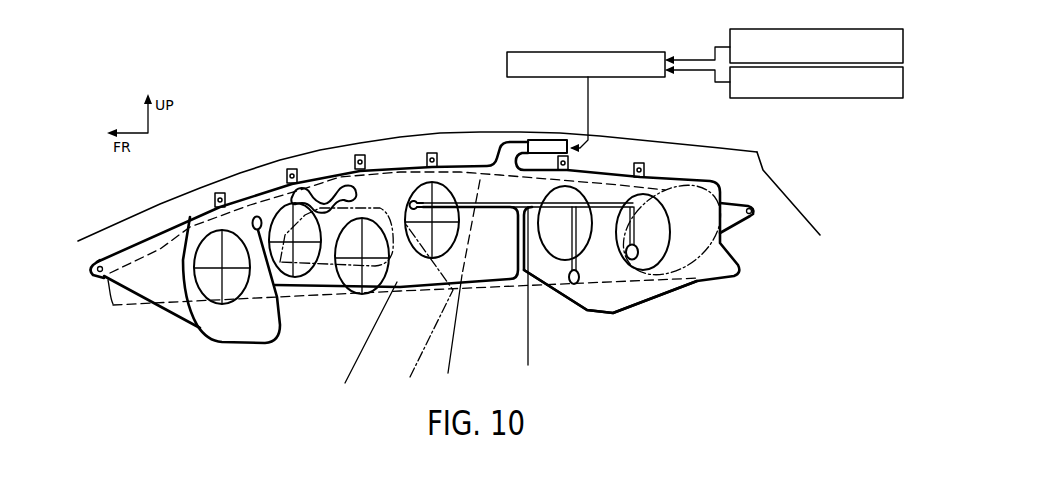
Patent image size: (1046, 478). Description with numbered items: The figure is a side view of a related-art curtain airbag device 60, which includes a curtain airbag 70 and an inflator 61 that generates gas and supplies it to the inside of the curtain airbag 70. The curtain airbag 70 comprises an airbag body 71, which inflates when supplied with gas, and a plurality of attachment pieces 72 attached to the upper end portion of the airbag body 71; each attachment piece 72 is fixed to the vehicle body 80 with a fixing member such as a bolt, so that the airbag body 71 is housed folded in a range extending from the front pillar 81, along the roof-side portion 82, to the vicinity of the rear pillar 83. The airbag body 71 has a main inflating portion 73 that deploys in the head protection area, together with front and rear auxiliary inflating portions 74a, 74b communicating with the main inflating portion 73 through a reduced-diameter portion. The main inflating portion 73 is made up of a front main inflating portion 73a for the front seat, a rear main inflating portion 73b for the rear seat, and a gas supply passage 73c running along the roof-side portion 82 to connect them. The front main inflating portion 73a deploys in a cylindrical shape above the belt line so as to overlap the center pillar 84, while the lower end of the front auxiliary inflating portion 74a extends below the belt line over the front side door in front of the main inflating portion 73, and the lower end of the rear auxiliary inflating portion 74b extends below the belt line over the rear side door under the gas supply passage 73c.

The curtain airbag device 60 is at (422, 237).
The inflator 61 is at (556, 140).
The curtain airbag 70 is at (422, 236).
The airbag body 71 is at (127, 239).
The attachment pieces 72 is at (217, 193).
The main inflating portion 73 is at (520, 233).
The front main inflating portion 73a is at (396, 282).
The rear main inflating portion 73b is at (683, 180).
The gas supply passage 73c is at (496, 176).
The front auxiliary inflating portion 74a is at (207, 318).
The rear auxiliary inflating portion 74b is at (594, 272).
The vehicle body 80 is at (477, 188).
The front pillar 81 is at (140, 213).
The roof-side portion 82 is at (484, 185).
The rear pillar 83 is at (782, 196).
The center pillar 84 is at (518, 333).